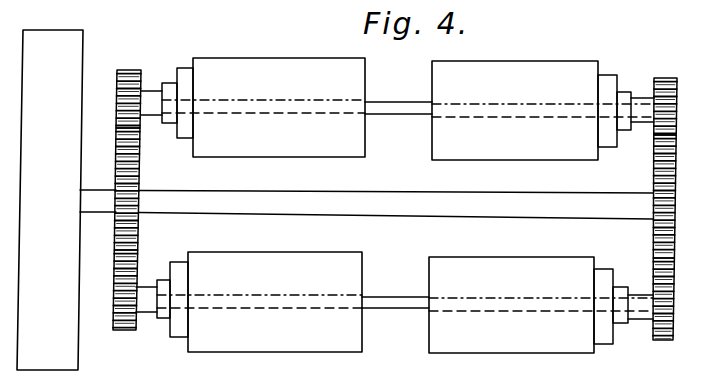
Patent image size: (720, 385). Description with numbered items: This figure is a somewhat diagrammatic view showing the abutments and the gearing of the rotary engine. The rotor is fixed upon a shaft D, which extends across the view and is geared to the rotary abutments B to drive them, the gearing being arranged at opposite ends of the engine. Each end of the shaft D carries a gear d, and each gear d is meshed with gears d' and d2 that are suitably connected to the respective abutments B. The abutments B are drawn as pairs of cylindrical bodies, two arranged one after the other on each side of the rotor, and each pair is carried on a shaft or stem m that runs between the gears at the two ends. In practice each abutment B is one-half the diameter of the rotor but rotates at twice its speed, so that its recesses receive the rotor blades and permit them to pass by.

The gear d2 is at (133, 69).
The gear d is at (395, 193).
The gear d' is at (393, 308).
The rotary abutment B is at (432, 143).
The shaft or valve stem m is at (399, 103).
The shaft D is at (396, 193).